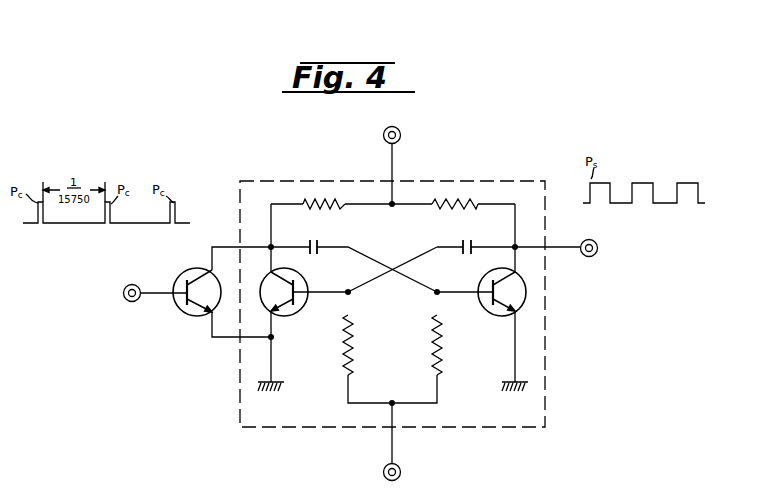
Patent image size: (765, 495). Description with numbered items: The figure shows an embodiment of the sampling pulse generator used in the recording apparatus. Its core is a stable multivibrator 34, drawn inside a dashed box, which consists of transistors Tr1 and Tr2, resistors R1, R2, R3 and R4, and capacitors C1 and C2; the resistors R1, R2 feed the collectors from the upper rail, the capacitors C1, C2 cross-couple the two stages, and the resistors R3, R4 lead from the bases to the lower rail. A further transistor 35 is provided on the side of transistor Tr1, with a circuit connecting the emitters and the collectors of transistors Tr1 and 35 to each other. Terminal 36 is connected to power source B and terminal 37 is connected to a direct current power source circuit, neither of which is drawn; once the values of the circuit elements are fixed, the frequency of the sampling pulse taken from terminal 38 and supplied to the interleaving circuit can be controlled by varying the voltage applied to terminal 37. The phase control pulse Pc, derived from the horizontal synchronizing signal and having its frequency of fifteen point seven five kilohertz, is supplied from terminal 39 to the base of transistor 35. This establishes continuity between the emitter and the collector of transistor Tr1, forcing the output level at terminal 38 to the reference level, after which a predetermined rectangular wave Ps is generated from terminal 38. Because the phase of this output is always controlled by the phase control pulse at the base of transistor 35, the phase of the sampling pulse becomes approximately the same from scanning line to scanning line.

The stable multivibrator 34 is at (497, 189).
The transistor 35 is at (176, 278).
The terminal 36 is at (401, 136).
The terminal 37 is at (383, 472).
The terminal 38 is at (588, 257).
The terminal 39 is at (128, 285).
The resistor R1 is at (320, 209).
The resistor R2 is at (460, 209).
The resistor R3 is at (356, 346).
The resistor R4 is at (432, 344).
The capacitor C1 is at (318, 252).
The capacitor C2 is at (465, 255).
The transistor Tr1 is at (296, 316).
The transistor Tr2 is at (488, 316).